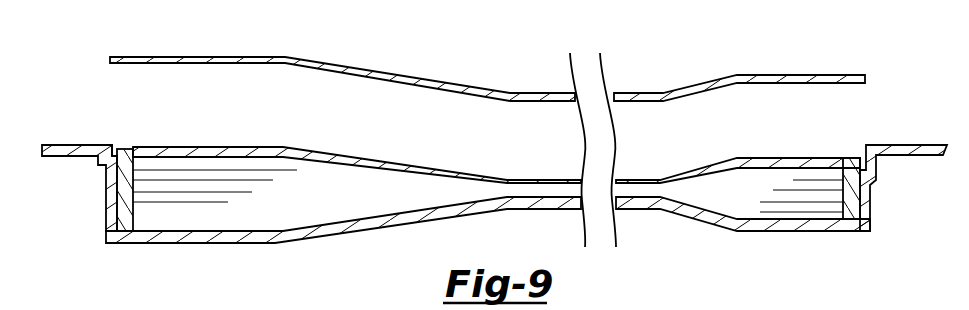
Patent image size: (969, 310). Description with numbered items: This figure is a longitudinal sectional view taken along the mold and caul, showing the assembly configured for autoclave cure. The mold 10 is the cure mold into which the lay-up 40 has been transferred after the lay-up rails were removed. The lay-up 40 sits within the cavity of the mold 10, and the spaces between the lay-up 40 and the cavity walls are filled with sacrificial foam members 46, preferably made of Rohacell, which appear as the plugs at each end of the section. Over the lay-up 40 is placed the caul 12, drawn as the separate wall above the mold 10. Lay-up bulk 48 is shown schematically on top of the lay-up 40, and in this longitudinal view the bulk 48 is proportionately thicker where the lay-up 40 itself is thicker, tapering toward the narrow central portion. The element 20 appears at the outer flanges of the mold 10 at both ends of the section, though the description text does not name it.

The mold 10 is at (106, 225).
The caul 12 is at (778, 78).
The flange 20 is at (114, 150).
The lay-up 40 is at (779, 200).
The sacrificial foam member 46 is at (127, 148).
The lay-up bulk 48 is at (253, 148).